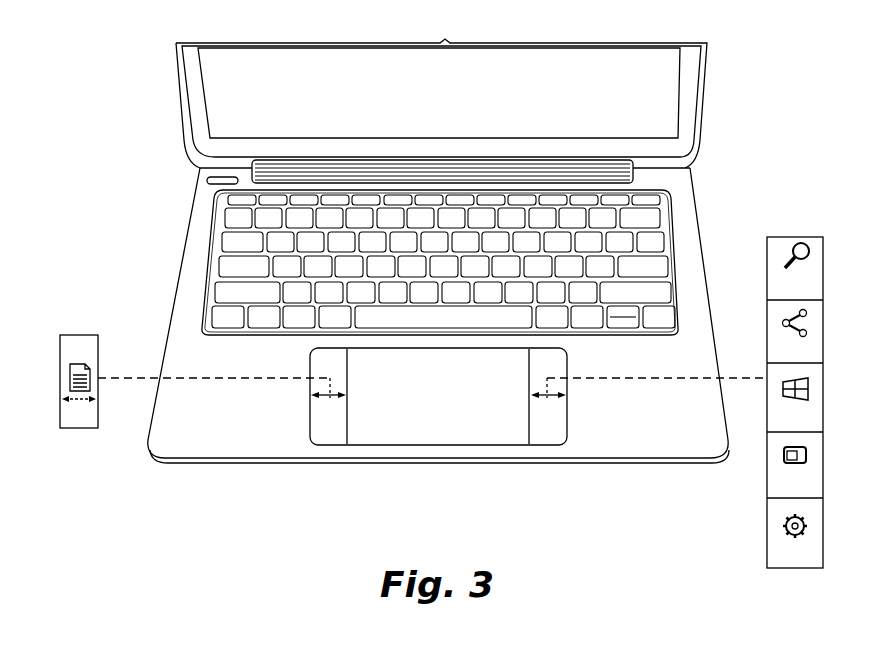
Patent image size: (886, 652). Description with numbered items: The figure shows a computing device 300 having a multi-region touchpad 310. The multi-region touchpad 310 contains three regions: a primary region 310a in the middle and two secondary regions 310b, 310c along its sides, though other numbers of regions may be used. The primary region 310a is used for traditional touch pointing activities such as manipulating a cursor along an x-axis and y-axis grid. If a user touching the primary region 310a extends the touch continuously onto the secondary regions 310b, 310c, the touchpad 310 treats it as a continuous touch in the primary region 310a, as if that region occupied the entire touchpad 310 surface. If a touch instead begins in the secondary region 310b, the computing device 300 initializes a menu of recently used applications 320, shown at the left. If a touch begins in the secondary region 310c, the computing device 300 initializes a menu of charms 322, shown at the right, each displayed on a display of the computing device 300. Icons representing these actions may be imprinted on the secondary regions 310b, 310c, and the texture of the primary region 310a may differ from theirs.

The computing device 300 is at (105, 100).
The multi-region touchpad 310 is at (308, 427).
The primary region 310a is at (445, 427).
The secondary region 310b is at (325, 427).
The secondary region 310c is at (555, 427).
The menu of recently used applications 320 is at (87, 428).
The menu of charms 322 is at (806, 237).